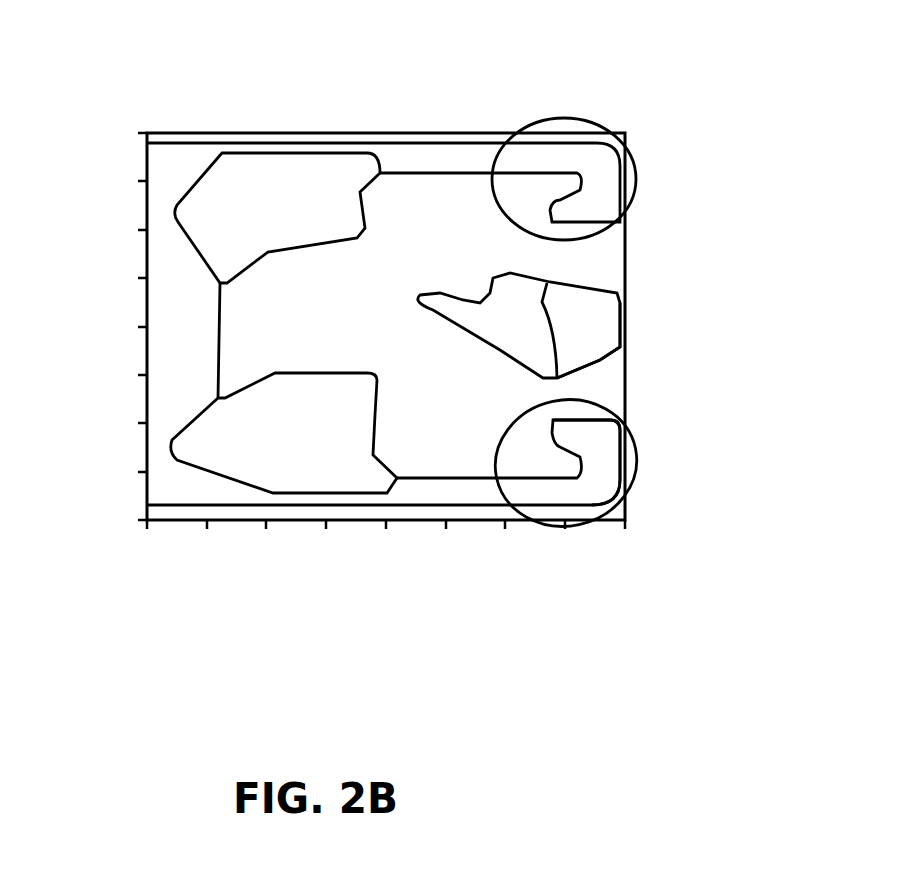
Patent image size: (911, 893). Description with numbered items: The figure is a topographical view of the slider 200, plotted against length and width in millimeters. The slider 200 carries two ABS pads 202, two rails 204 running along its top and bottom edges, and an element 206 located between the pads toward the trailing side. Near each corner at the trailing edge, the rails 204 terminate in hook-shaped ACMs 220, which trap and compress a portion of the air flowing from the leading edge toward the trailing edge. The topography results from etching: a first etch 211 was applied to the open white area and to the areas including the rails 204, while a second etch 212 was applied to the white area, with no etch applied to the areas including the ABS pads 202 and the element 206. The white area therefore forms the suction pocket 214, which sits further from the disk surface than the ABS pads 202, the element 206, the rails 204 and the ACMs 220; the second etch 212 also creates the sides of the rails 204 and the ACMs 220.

The slider 200 is at (617, 71).
The ABS pads 202 is at (243, 392).
The rails 204 is at (477, 540).
The element 206 is at (623, 312).
The first etch 211 is at (627, 483).
The second etch 212 is at (600, 376).
The suction pocket 214 is at (313, 335).
The air compression mechanisms (ACMs) 220 is at (632, 174).